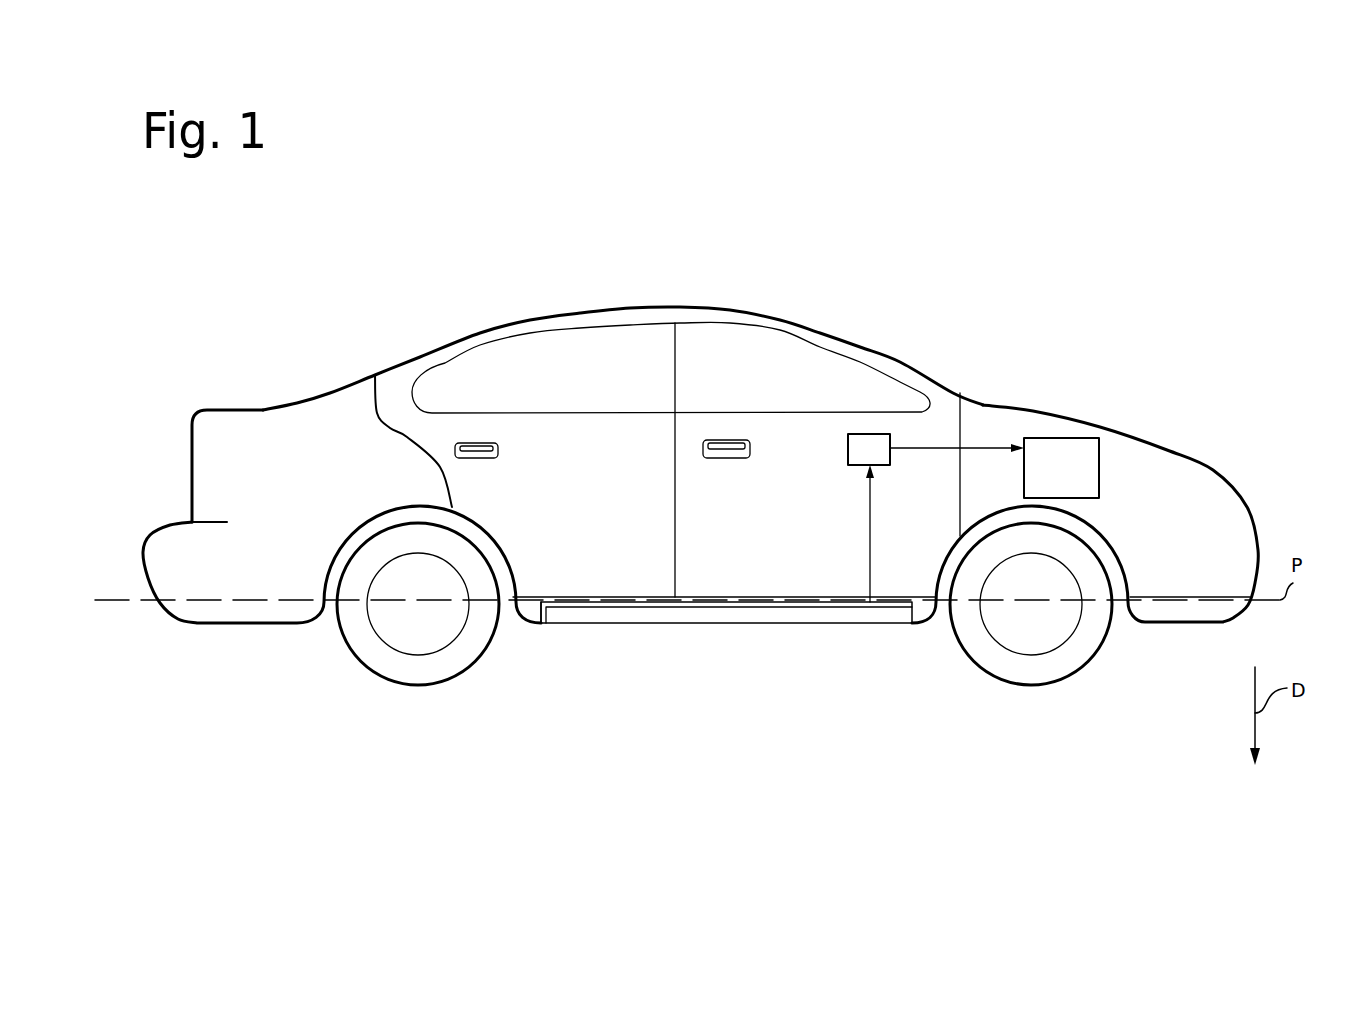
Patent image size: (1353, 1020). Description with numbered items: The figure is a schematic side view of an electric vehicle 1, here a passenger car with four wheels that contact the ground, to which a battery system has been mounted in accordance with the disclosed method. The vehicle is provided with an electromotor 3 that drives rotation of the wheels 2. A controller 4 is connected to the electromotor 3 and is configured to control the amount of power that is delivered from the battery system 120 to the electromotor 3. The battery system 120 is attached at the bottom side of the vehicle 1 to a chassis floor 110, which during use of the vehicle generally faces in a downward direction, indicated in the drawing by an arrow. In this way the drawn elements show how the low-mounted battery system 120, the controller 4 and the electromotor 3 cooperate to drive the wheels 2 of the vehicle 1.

The electric vehicle 1 is at (1017, 232).
The wheels 2 is at (395, 625).
The electromotor 3 is at (1073, 450).
The controller 4 is at (875, 442).
The chassis floor 110 is at (540, 602).
The battery system 120 is at (705, 612).